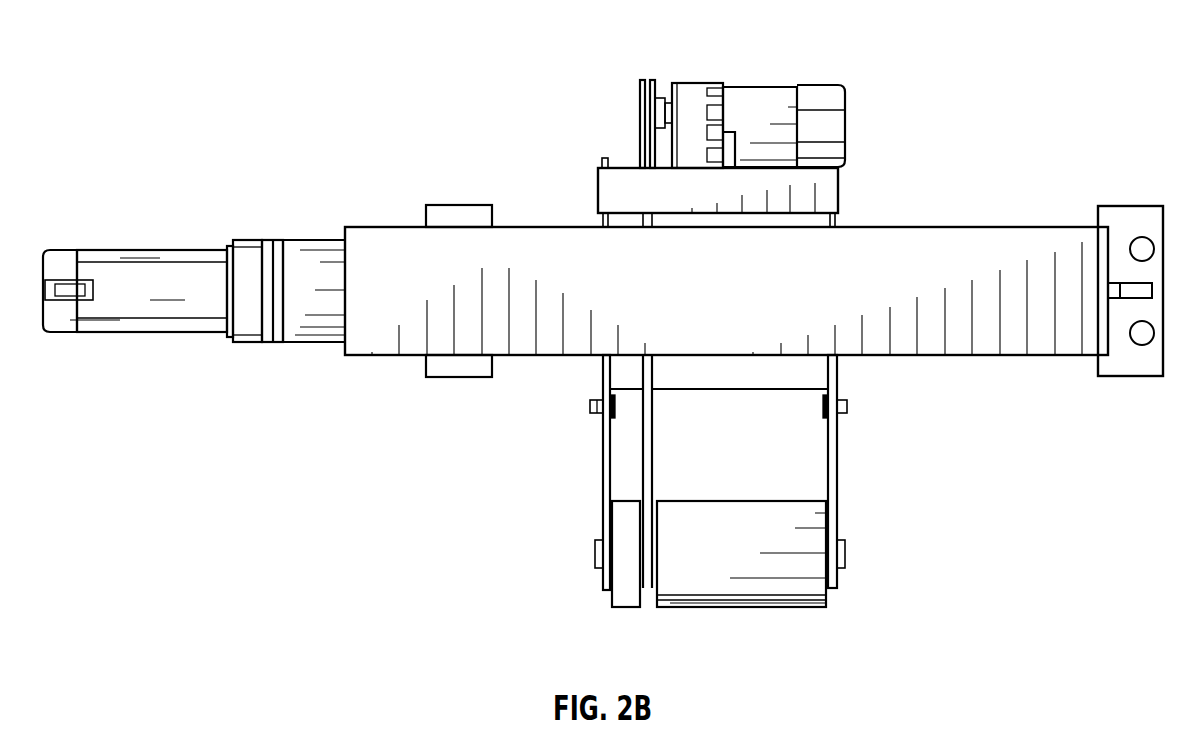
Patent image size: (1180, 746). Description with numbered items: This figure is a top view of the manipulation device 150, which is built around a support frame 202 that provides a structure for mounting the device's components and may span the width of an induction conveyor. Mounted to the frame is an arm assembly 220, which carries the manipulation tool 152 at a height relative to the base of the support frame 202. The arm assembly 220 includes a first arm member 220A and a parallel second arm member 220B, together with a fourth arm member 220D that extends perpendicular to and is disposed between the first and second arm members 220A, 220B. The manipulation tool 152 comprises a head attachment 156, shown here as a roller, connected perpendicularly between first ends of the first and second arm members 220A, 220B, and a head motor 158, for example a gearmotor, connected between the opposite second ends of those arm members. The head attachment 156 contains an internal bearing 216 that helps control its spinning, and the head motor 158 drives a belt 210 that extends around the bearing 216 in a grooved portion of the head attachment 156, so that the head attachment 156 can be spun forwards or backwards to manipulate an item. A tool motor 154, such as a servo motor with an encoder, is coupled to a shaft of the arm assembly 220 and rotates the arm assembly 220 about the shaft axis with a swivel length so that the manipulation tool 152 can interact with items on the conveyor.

The manipulation device 150 is at (266, 118).
The manipulation tool 152 is at (717, 508).
The tool motor 154 is at (188, 322).
The head attachment 156 is at (715, 585).
The head motor 158 is at (828, 98).
The support frame 202 is at (1037, 340).
The belt 210 is at (643, 469).
The internal bearing 216 is at (640, 556).
The arm assembly 220 is at (717, 472).
The first arm member 220A is at (837, 420).
The second arm member 220B is at (602, 437).
The fourth arm member 220D is at (838, 190).